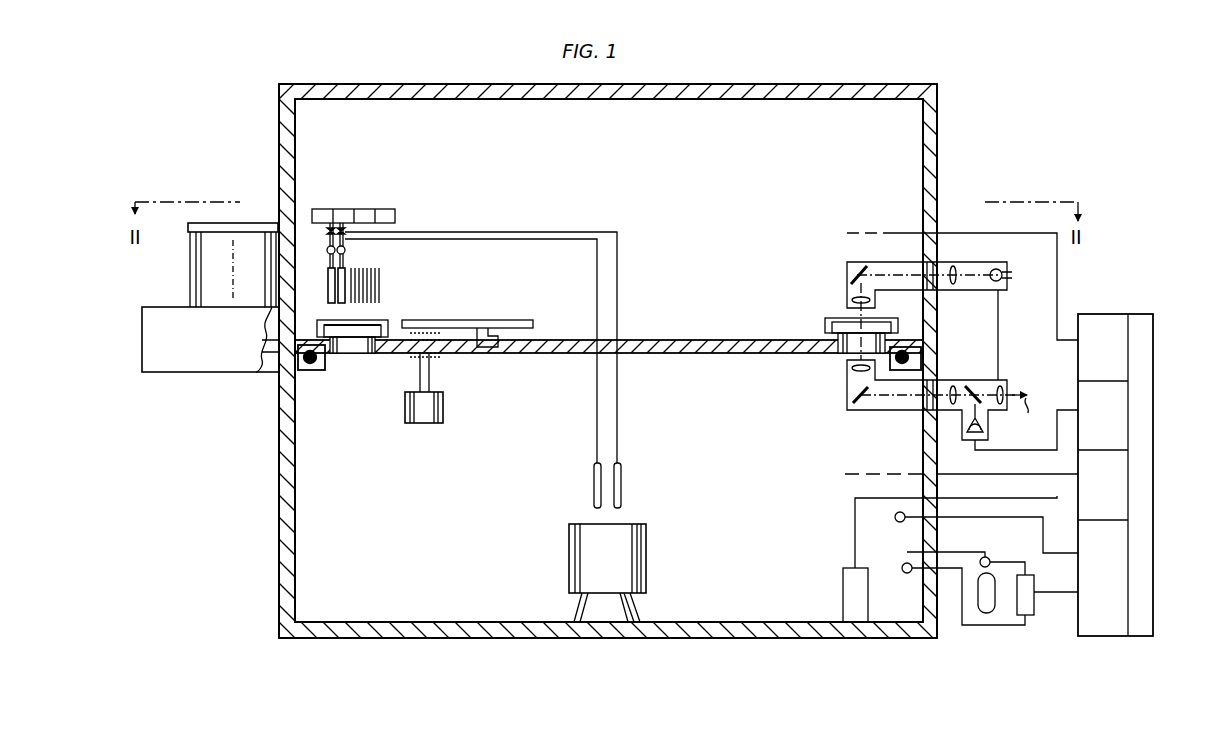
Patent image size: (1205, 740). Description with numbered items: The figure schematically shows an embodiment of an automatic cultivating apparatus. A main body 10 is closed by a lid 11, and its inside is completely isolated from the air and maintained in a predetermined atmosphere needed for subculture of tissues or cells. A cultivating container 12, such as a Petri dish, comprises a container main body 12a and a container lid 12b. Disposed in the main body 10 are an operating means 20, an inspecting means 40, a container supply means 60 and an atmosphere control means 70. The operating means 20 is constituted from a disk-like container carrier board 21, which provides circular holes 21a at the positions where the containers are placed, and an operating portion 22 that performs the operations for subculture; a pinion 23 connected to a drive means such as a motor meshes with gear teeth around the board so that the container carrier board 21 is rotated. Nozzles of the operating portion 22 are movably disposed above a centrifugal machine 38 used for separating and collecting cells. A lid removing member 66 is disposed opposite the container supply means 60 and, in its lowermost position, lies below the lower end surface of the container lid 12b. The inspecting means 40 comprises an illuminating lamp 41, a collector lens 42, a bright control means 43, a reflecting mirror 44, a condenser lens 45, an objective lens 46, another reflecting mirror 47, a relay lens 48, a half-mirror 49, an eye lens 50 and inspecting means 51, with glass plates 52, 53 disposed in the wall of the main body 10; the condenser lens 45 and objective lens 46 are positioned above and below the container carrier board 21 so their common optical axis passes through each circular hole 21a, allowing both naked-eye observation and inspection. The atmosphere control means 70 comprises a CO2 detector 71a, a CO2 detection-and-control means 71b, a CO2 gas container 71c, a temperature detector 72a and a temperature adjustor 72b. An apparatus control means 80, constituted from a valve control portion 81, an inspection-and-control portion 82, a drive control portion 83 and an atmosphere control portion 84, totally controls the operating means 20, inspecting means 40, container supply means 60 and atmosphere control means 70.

The main body 10 is at (292, 401).
The lid 11 is at (434, 86).
The cultivating container 12 is at (377, 319).
The container main body 12a is at (349, 359).
The container lid 12b is at (326, 320).
The operating means 20 is at (470, 428).
The container carrier board 21 is at (450, 352).
The circular holes 21a is at (365, 355).
The operating portion 22 is at (335, 207).
The pinion 23 is at (416, 355).
The centrifugal machine 38 is at (642, 552).
The inspecting means 40 is at (843, 393).
The illuminating lamp 41 is at (1000, 270).
The collector lens 42 is at (953, 266).
The bright control means 43 is at (884, 266).
The reflecting mirror 44 is at (856, 270).
The condenser lens 45 is at (852, 301).
The objective lens 46 is at (852, 368).
The reflecting mirror 47 is at (861, 404).
The relay lens 48 is at (953, 385).
The half-mirror 49 is at (973, 385).
The eye lens 50 is at (1003, 385).
The inspecting means 51 is at (984, 430).
The glass plate 52 is at (935, 249).
The glass plate 53 is at (930, 410).
The container supply means 60 is at (258, 221).
The lid removing member 66 is at (480, 320).
The atmosphere control means 70 is at (848, 533).
The CO2 detector 71a is at (908, 573).
The CO2 detection-and-control means 71b is at (1034, 606).
The CO2 gas container 71c is at (985, 614).
The temperature detector 72a is at (898, 522).
The temperature adjustor 72b is at (857, 628).
The apparatus control means 80 is at (1138, 314).
The valve control portion 81 is at (1100, 314).
The inspection-and-control portion 82 is at (1110, 410).
The drive control portion 83 is at (1110, 488).
The atmosphere control portion 84 is at (1100, 636).